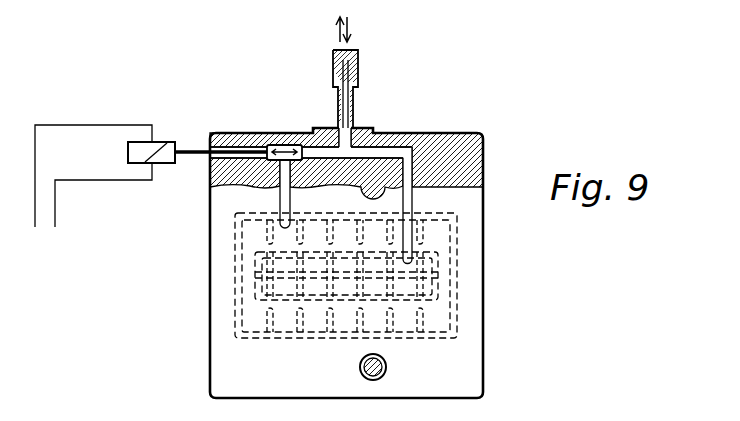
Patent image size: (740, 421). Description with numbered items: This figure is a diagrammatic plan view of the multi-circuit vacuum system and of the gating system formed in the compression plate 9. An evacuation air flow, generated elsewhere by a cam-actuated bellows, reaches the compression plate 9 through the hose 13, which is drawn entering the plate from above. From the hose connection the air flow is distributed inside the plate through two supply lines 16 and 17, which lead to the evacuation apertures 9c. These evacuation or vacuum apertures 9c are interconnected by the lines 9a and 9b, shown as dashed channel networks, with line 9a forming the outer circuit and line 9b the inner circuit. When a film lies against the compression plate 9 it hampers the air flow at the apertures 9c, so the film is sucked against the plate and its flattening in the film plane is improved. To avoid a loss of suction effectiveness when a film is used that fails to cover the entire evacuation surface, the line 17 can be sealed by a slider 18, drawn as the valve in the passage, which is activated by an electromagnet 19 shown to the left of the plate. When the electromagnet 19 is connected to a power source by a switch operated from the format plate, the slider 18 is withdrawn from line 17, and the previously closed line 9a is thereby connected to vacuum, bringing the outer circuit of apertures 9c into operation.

The compression plate 9 is at (458, 358).
The line 9a is at (453, 316).
The line 9b is at (453, 265).
The evacuation apertures 9c is at (233, 297).
The hose 13 is at (357, 60).
The supply line 16 is at (408, 163).
The supply line 17 is at (279, 201).
The slider 18 is at (282, 133).
The electromagnet 19 is at (165, 142).